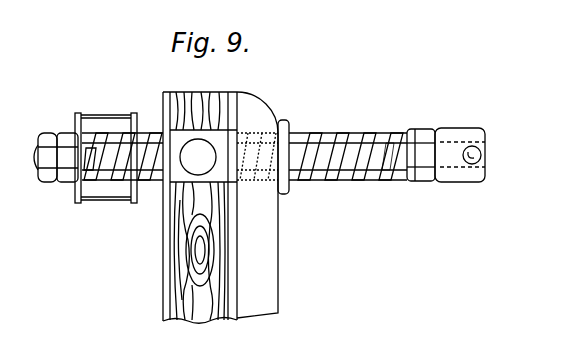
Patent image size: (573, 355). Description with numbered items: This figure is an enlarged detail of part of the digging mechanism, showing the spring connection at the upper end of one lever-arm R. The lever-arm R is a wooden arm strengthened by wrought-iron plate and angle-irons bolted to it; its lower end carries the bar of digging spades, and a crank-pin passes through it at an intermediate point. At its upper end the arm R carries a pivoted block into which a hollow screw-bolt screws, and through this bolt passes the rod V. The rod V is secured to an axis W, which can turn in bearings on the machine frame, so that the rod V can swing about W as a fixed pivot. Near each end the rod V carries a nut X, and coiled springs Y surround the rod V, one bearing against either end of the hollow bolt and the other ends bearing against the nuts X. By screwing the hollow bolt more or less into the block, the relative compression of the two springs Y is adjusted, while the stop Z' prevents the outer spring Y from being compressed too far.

The lever-arm R is at (226, 215).
The hole t is at (198, 157).
The rod V is at (342, 192).
The coiled springs Y is at (243, 147).
The nut X is at (234, 146).
The stop Z' is at (106, 167).
The axis W is at (481, 155).